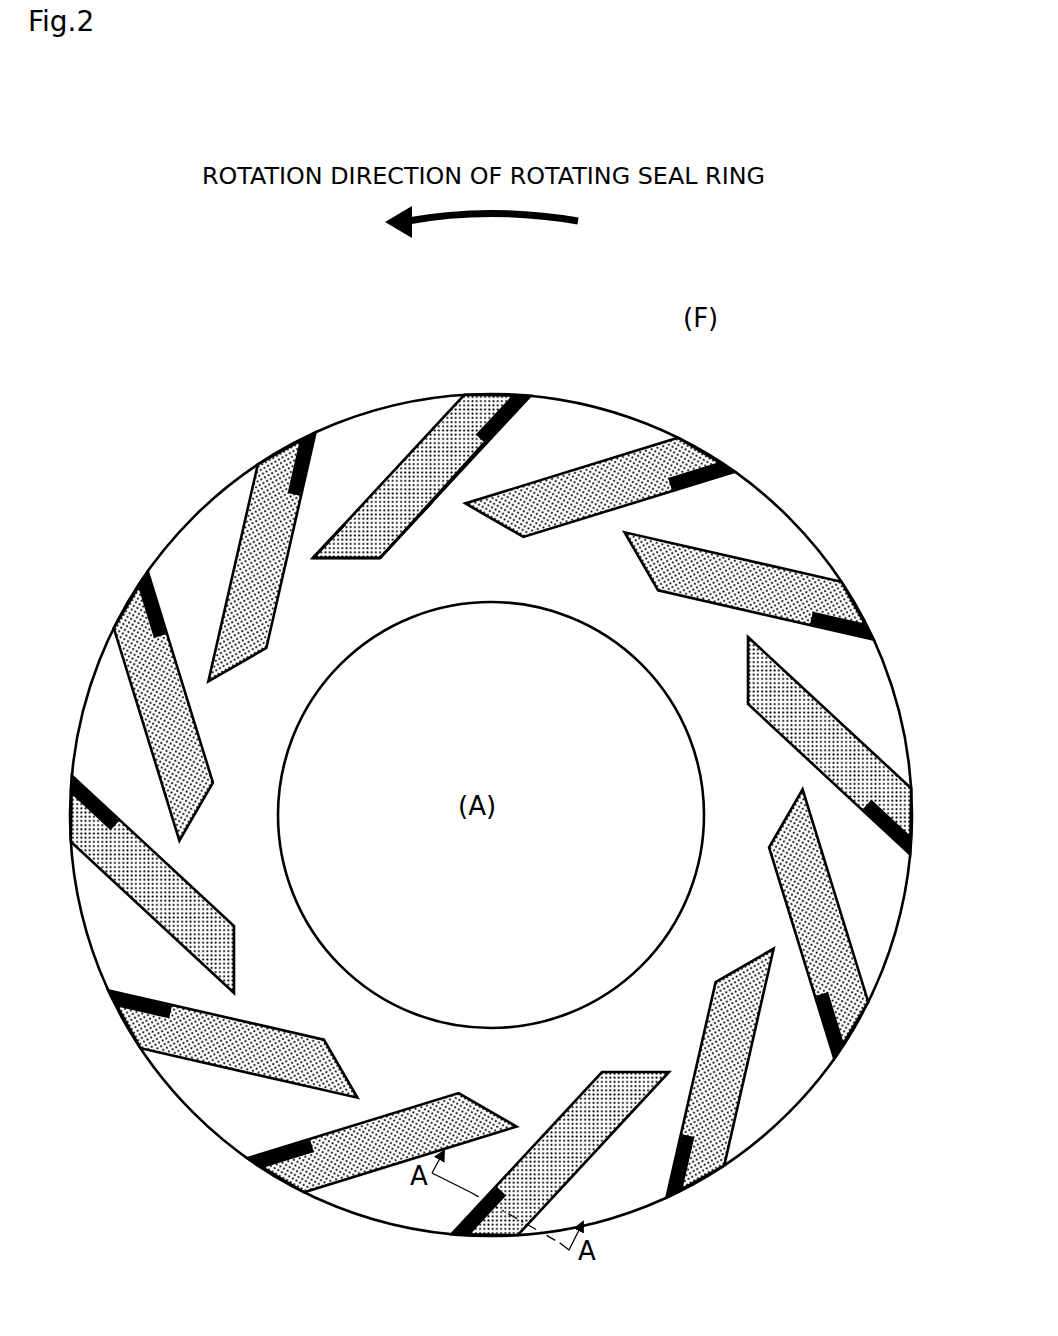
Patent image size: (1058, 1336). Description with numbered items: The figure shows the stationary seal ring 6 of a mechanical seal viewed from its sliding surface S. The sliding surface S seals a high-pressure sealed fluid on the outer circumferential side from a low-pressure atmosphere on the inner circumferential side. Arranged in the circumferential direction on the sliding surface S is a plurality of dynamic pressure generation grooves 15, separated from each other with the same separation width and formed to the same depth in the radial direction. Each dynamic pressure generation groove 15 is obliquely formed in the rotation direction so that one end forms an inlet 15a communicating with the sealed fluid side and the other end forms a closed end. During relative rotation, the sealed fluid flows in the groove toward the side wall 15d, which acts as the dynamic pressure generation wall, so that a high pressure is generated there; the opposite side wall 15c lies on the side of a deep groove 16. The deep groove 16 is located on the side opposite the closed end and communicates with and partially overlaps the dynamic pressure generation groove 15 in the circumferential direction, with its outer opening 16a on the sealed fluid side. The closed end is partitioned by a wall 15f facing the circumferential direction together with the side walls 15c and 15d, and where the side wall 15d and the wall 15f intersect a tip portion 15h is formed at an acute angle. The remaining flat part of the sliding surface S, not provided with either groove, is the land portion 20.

The stationary seal ring 6 is at (722, 422).
The land portion 20 is at (745, 520).
The dynamic pressure generation groove 15 is at (485, 397).
The deep groove 16 is at (529, 395).
The inlet 15a is at (280, 443).
The outer opening of deep groove 16a is at (318, 425).
The tip portion 15h is at (315, 553).
The wall 15f is at (366, 543).
The side wall 15d is at (432, 482).
The side wall 15c is at (428, 483).
The sliding surface S is at (585, 428).